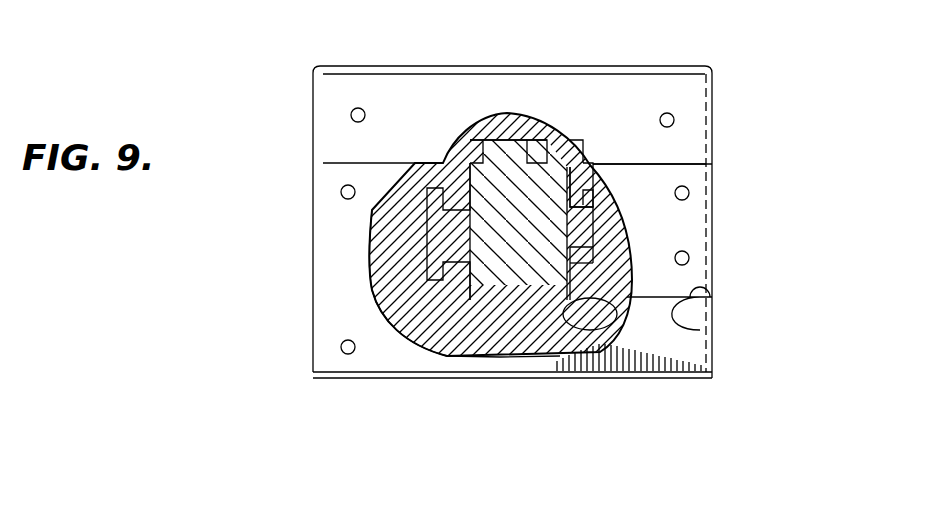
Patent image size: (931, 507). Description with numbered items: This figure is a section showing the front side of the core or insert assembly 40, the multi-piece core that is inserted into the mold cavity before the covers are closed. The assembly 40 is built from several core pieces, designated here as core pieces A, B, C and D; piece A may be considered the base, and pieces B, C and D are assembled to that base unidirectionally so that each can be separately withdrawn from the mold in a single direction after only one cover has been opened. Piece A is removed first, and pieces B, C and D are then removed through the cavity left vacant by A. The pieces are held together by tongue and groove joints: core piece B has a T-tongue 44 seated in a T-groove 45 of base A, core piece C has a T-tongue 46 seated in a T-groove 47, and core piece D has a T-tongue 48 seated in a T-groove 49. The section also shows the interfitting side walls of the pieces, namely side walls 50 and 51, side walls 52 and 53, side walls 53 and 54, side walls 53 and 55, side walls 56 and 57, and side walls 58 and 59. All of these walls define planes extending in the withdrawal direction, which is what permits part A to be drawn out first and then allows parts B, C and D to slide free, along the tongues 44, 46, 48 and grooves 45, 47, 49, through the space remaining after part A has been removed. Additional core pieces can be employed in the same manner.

The core or insert assembly 40 is at (362, 299).
The T-tongue 44 is at (427, 243).
The T-groove 45 is at (372, 214).
The T-tongue 46 is at (627, 245).
The T-groove 47 is at (627, 209).
The T-tongue 48 is at (487, 118).
The T-groove 49 is at (522, 135).
The piece side wall 50 is at (480, 290).
The piece side wall 51 is at (480, 363).
The piece side wall 52 is at (368, 163).
The piece side wall 53 is at (343, 163).
The piece side wall 54 is at (577, 138).
The piece side wall 55 is at (652, 163).
The piece side wall 56 is at (628, 298).
The piece side wall 57 is at (628, 360).
The piece side wall 58 is at (700, 330).
The piece side wall 59 is at (700, 284).
The core piece A is at (503, 360).
The core piece B is at (370, 272).
The core piece C is at (580, 233).
The core piece D is at (510, 113).